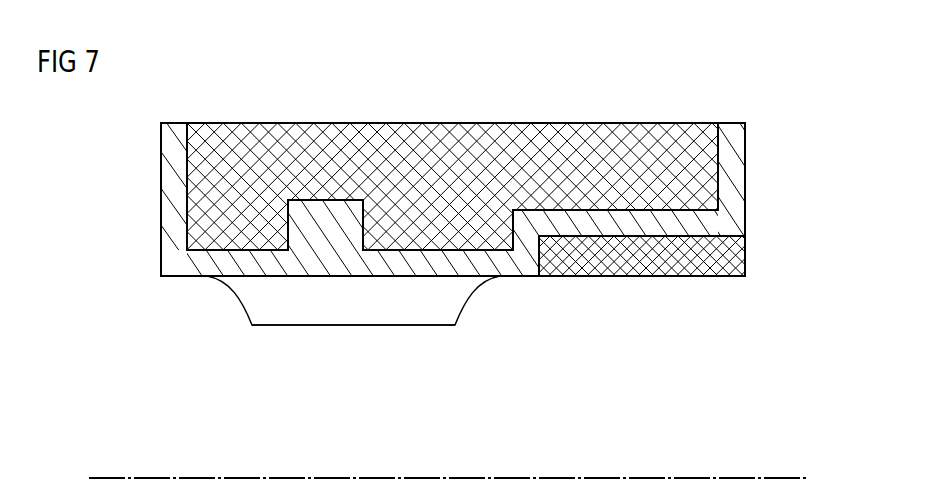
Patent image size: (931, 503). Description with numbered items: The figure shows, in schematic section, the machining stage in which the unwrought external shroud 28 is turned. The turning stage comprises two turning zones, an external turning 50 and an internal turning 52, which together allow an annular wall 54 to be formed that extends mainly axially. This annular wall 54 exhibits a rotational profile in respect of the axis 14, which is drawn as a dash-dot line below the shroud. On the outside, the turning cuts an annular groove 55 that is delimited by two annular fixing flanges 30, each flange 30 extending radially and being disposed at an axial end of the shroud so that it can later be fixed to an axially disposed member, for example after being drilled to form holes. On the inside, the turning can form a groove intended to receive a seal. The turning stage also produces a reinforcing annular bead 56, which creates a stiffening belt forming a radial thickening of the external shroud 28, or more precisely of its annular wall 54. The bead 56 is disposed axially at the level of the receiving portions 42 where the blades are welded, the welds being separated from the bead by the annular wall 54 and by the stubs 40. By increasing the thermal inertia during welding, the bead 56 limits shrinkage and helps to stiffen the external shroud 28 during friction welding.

The axis 14 is at (548, 478).
The unwrought external shroud 28 is at (700, 351).
The annular fixing flange 30 is at (175, 200).
The stub 40 is at (313, 300).
The receiving portion 42 is at (283, 325).
The external turning 50 is at (490, 160).
The internal turning 52 is at (637, 250).
The annular wall 54 is at (413, 258).
The annular groove 55 is at (583, 92).
The reinforcing annular bead 56 is at (333, 225).